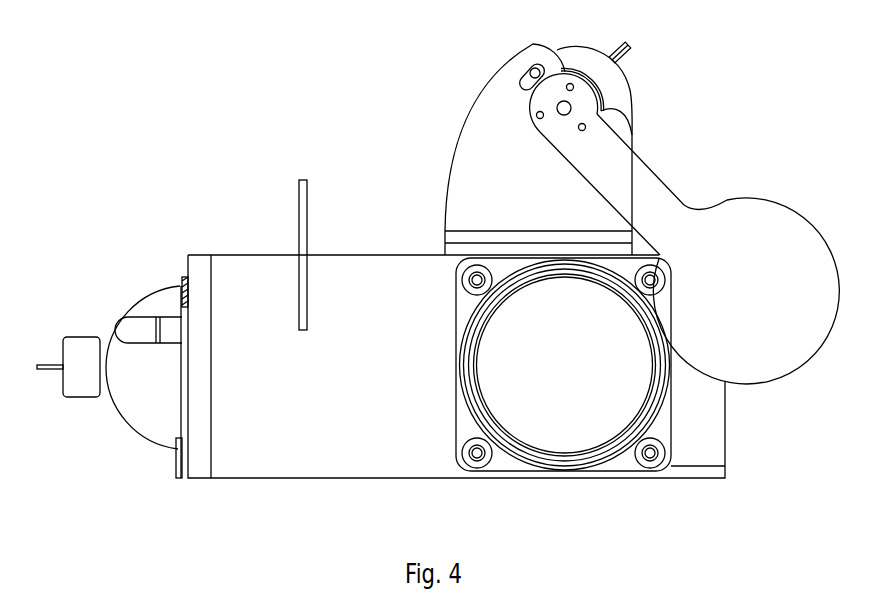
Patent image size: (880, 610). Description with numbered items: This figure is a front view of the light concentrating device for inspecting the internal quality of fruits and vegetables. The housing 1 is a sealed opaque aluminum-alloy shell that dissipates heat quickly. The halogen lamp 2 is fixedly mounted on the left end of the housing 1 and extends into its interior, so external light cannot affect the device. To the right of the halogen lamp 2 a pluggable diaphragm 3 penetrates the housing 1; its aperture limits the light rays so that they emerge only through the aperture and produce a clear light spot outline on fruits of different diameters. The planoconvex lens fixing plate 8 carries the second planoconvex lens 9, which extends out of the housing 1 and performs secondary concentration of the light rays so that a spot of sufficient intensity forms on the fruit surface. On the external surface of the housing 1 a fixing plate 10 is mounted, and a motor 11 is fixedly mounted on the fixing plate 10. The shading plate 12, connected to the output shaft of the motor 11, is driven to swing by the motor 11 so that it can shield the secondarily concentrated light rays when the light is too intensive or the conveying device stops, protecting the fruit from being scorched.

The housing 1 is at (232, 264).
The halogen lamp 2 is at (112, 325).
The diaphragm 3 is at (302, 207).
The planoconvex lens fixing plate 8 is at (628, 465).
The second planoconvex lens 9 is at (635, 370).
The fixing plate 10 is at (447, 250).
The motor 11 is at (498, 98).
The shading plate 12 is at (640, 198).